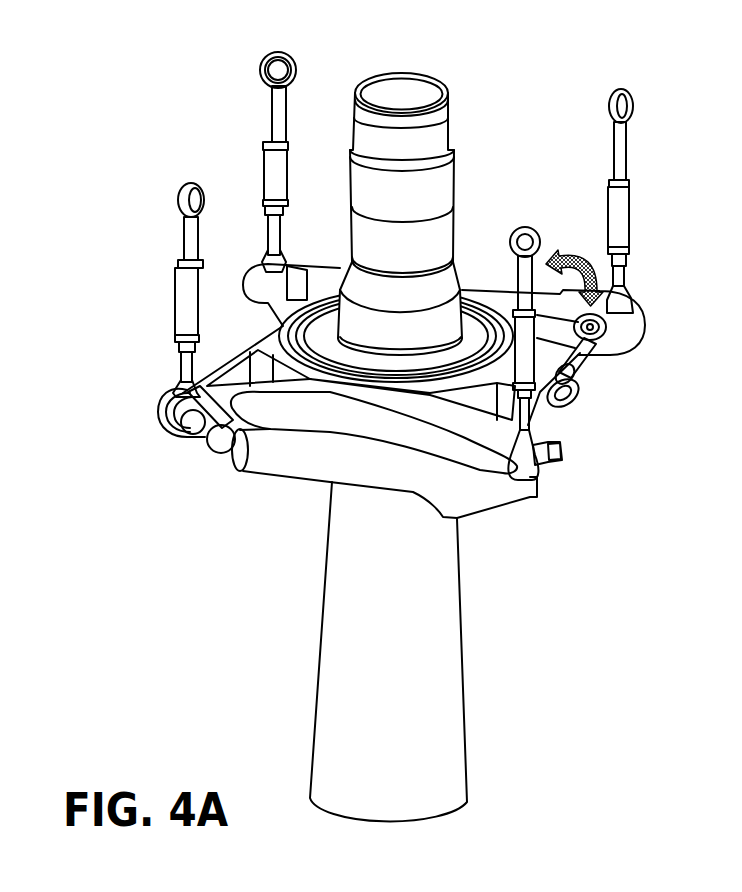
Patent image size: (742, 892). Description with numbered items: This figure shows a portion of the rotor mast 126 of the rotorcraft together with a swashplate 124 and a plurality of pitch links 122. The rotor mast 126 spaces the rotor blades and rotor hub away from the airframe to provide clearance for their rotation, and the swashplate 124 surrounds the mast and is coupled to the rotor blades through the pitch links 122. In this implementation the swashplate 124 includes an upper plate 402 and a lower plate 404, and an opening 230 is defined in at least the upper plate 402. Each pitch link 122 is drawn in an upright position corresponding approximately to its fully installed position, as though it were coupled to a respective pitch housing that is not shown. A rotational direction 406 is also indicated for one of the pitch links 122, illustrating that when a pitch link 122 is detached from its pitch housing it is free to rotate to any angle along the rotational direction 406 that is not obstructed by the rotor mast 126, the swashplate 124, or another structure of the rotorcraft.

The pitch link 122 is at (263, 72).
The swashplate 124 is at (233, 464).
The rotor mast 126 is at (320, 665).
The opening 230 is at (236, 354).
The upper plate 402 is at (380, 423).
The lower plate 404 is at (343, 478).
The rotational direction 406 is at (590, 272).